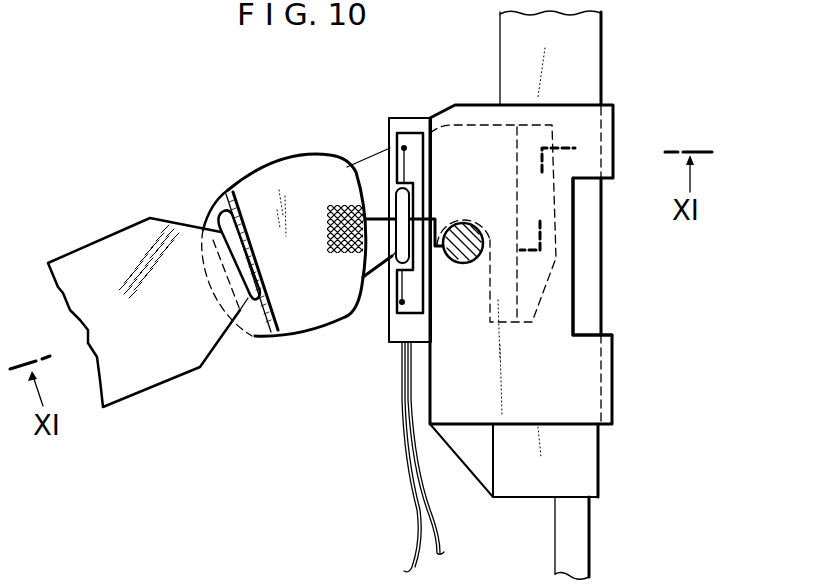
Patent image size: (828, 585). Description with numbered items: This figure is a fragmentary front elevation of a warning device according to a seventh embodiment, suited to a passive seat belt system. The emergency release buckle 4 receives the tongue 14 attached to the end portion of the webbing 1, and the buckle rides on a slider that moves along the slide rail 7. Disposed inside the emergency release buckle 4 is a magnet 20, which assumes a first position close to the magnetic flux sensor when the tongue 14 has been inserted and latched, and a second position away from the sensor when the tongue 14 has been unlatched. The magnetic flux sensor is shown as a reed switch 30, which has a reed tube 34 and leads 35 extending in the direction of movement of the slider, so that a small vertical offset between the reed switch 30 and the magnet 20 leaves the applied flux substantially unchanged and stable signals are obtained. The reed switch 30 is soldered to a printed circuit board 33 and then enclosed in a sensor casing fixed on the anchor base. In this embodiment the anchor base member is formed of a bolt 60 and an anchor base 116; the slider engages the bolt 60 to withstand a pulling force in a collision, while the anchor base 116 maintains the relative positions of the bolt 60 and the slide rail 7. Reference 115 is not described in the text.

The webbing 1 is at (97, 257).
The emergency release buckle 4 is at (240, 197).
The slide rail 7 is at (587, 63).
The tongue 14 is at (253, 320).
The magnet 20 is at (327, 208).
The reed switch 30 is at (410, 191).
The printed circuit board 33 is at (413, 306).
The reed tube 34 is at (408, 208).
The leads 35 is at (405, 147).
The bolt 60 is at (463, 268).
The housing 115 is at (617, 393).
The anchor base 116 is at (575, 355).